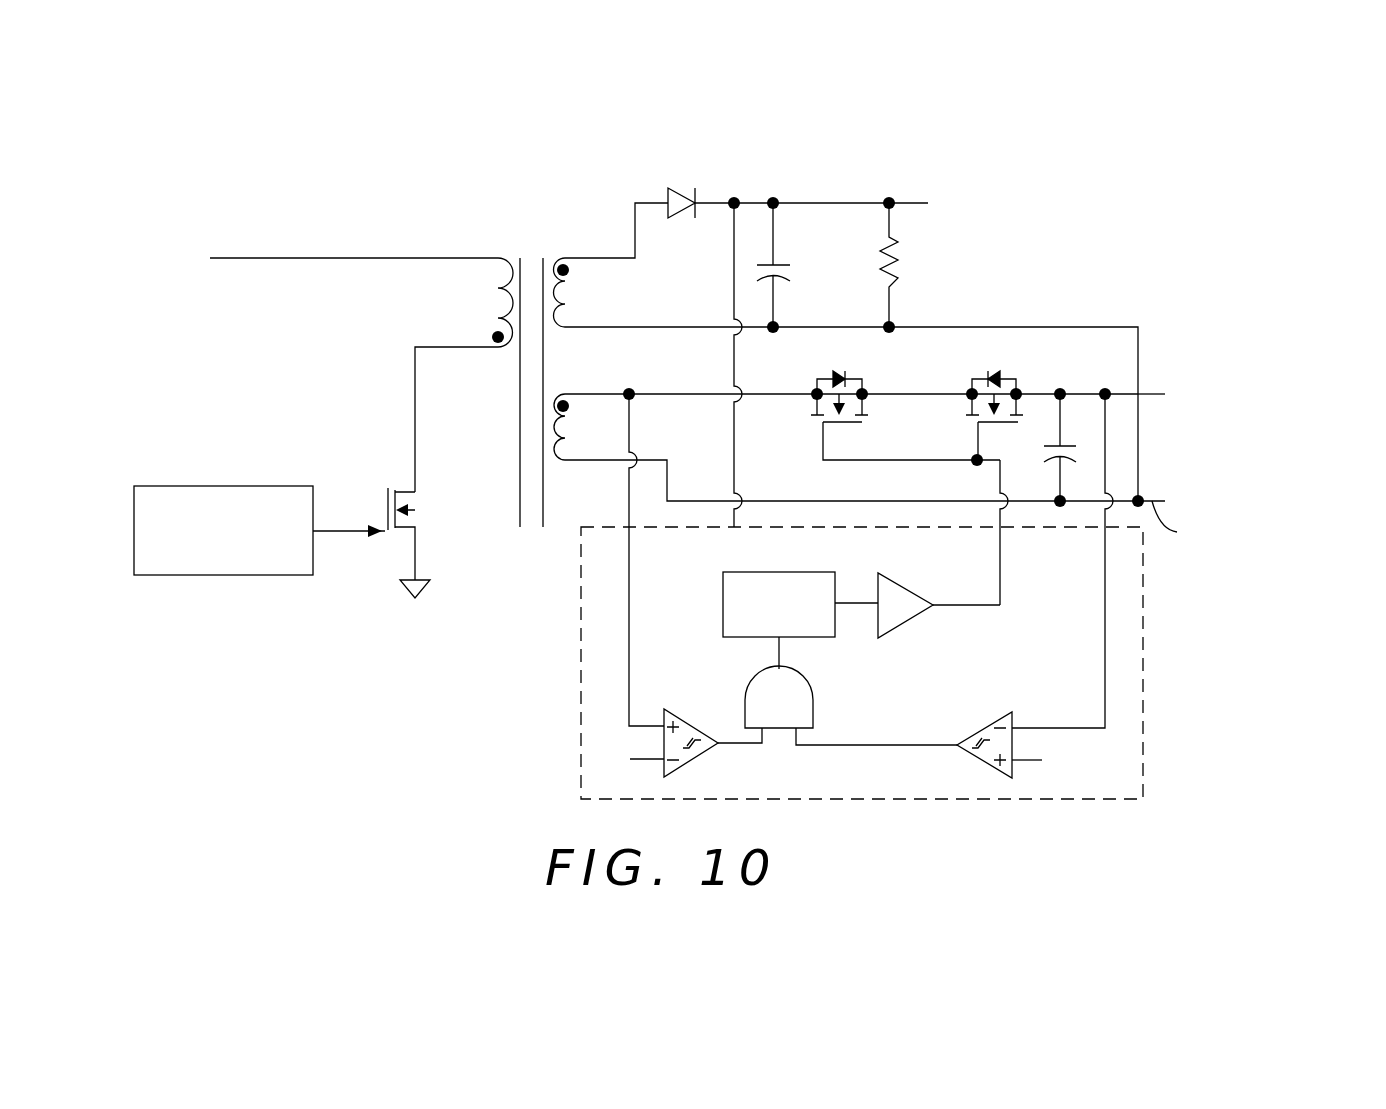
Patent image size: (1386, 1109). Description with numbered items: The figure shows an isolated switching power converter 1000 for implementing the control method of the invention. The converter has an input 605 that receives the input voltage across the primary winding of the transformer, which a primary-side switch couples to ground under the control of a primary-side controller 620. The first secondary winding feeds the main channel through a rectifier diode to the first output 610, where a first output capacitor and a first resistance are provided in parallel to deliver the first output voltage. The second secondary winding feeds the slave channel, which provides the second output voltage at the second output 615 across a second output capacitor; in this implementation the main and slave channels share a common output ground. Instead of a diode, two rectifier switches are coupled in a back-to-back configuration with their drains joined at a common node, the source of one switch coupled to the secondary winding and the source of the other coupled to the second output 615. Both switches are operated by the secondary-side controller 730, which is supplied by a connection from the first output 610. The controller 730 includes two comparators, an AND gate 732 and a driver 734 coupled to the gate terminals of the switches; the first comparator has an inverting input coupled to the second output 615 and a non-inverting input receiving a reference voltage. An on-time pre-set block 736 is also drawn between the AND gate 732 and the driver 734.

The input 605 is at (212, 258).
The first output 610 is at (928, 203).
The second output 615 is at (1165, 394).
The primary-side controller 620 is at (210, 486).
The secondary-side controller 730 is at (580, 703).
The AND gate 732 is at (745, 702).
The driver 734 is at (910, 588).
The on-time pre-set block 736 is at (795, 572).
The power converter 1000 is at (284, 622).